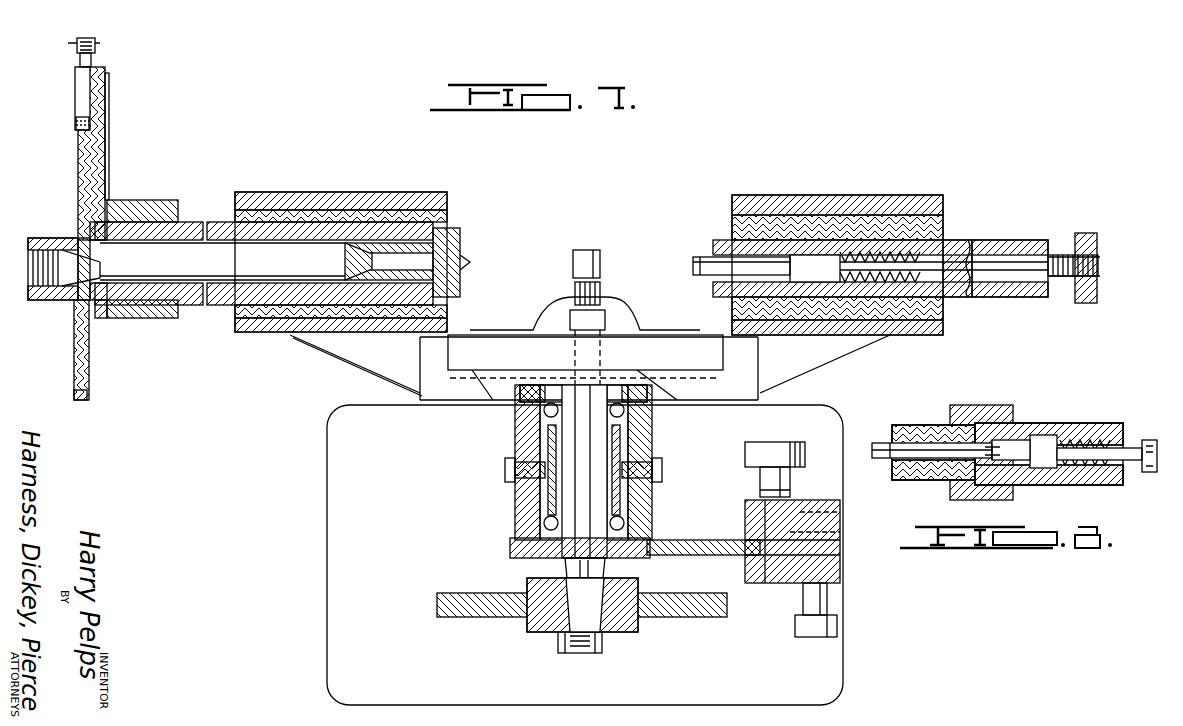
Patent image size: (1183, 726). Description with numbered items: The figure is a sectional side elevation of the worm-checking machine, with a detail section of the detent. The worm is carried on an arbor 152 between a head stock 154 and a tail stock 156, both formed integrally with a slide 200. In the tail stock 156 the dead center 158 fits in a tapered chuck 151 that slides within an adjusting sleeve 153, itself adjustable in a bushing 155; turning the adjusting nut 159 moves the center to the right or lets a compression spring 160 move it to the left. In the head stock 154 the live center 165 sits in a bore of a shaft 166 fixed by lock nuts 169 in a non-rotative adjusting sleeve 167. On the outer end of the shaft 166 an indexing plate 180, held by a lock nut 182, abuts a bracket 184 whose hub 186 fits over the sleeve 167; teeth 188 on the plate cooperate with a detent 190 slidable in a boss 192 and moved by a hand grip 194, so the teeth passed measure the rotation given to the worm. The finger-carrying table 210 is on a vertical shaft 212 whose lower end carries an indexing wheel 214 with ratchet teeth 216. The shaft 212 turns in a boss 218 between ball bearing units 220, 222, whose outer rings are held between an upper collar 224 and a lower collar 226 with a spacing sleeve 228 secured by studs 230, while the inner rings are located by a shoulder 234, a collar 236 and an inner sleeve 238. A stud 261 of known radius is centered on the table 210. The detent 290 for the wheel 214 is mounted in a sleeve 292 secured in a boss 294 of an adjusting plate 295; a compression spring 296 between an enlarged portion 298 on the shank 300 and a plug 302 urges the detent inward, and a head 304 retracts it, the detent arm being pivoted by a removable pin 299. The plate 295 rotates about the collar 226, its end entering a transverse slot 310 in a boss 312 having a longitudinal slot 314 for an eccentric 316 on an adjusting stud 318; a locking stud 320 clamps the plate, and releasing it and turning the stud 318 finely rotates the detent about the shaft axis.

In FIG. 7, the tapered chuck 151 is at (785, 262).
In FIG. 7, the arbor 152 is at (975, 262).
In FIG. 7, the adjusting sleeve 153 is at (930, 230).
In FIG. 7, the stock 154 is at (335, 195).
In FIG. 7, the bushing 155 is at (962, 250).
In FIG. 7, the stock 156 is at (752, 200).
In FIG. 7, the dead center 158 is at (693, 258).
In FIG. 7, the adjusting nut 159 is at (1085, 235).
In FIG. 7, the compression spring 160 is at (900, 240).
In FIG. 7, the live center 165 is at (455, 265).
In FIG. 7, the shaft 166 is at (236, 261).
In FIG. 7, the adjusting sleeve 167 is at (205, 215).
In FIG. 7, the lock nuts 169 is at (110, 318).
In FIG. 7, the indexing plate 180 is at (78, 192).
In FIG. 7, the lock nut 182 is at (42, 286).
In FIG. 7, the bracket 184 is at (100, 168).
In FIG. 7, the hub 186 is at (140, 202).
In FIG. 7, the teeth 188 is at (90, 398).
In FIG. 7, the detent 190 is at (78, 125).
In FIG. 7, the boss 192 is at (75, 75).
In FIG. 7, the hand grip 194 is at (95, 45).
In FIG. 7, the slide 200 is at (470, 330).
In FIG. 7, the table 210 is at (617, 335).
In FIG. 7, the shaft 212 is at (584, 506).
In FIG. 7, the indexing wheel 214 is at (660, 618).
In FIG. 7, the ratchet teeth 216 is at (724, 618).
In FIG. 7, the boss 218 is at (640, 430).
In FIG. 7, the ball bearing unit 220 is at (650, 395).
In FIG. 7, the ball bearing unit 222 is at (648, 520).
In FIG. 7, the upper collar 224 is at (525, 392).
In FIG. 7, the lower collar 226 is at (515, 560).
In FIG. 7, the spacing sleeve 228 is at (540, 432).
In FIG. 7, the studs 230 is at (505, 465).
In FIG. 7, the shoulder 234 is at (572, 398).
In FIG. 7, the collar 236 is at (555, 545).
In FIG. 7, the inner sleeve 238 is at (545, 517).
In FIG. 7, the stud 261 is at (600, 262).
In FIG. 8, the detent 290 is at (880, 440).
In FIG. 8, the sleeve 292 is at (920, 425).
In FIG. 8, the boss 294 is at (985, 415).
In FIG. 7, the adjusting plate 295 is at (700, 556).
In FIG. 8, the compression spring 296 is at (1095, 432).
In FIG. 8, the enlarged portion 298 is at (1040, 440).
In FIG. 8, the removable pin 299 is at (985, 458).
In FIG. 8, the shank 300 is at (1120, 450).
In FIG. 8, the plug 302 is at (1103, 470).
In FIG. 8, the head 304 is at (1148, 472).
In FIG. 7, the transverse slot 310 is at (755, 528).
In FIG. 7, the boss 312 is at (812, 505).
In FIG. 7, the longitudinally extending slot 314 is at (840, 536).
In FIG. 7, the eccentric 316 is at (838, 512).
In FIG. 7, the adjusting stud 318 is at (818, 610).
In FIG. 7, the locking stud 320 is at (750, 448).